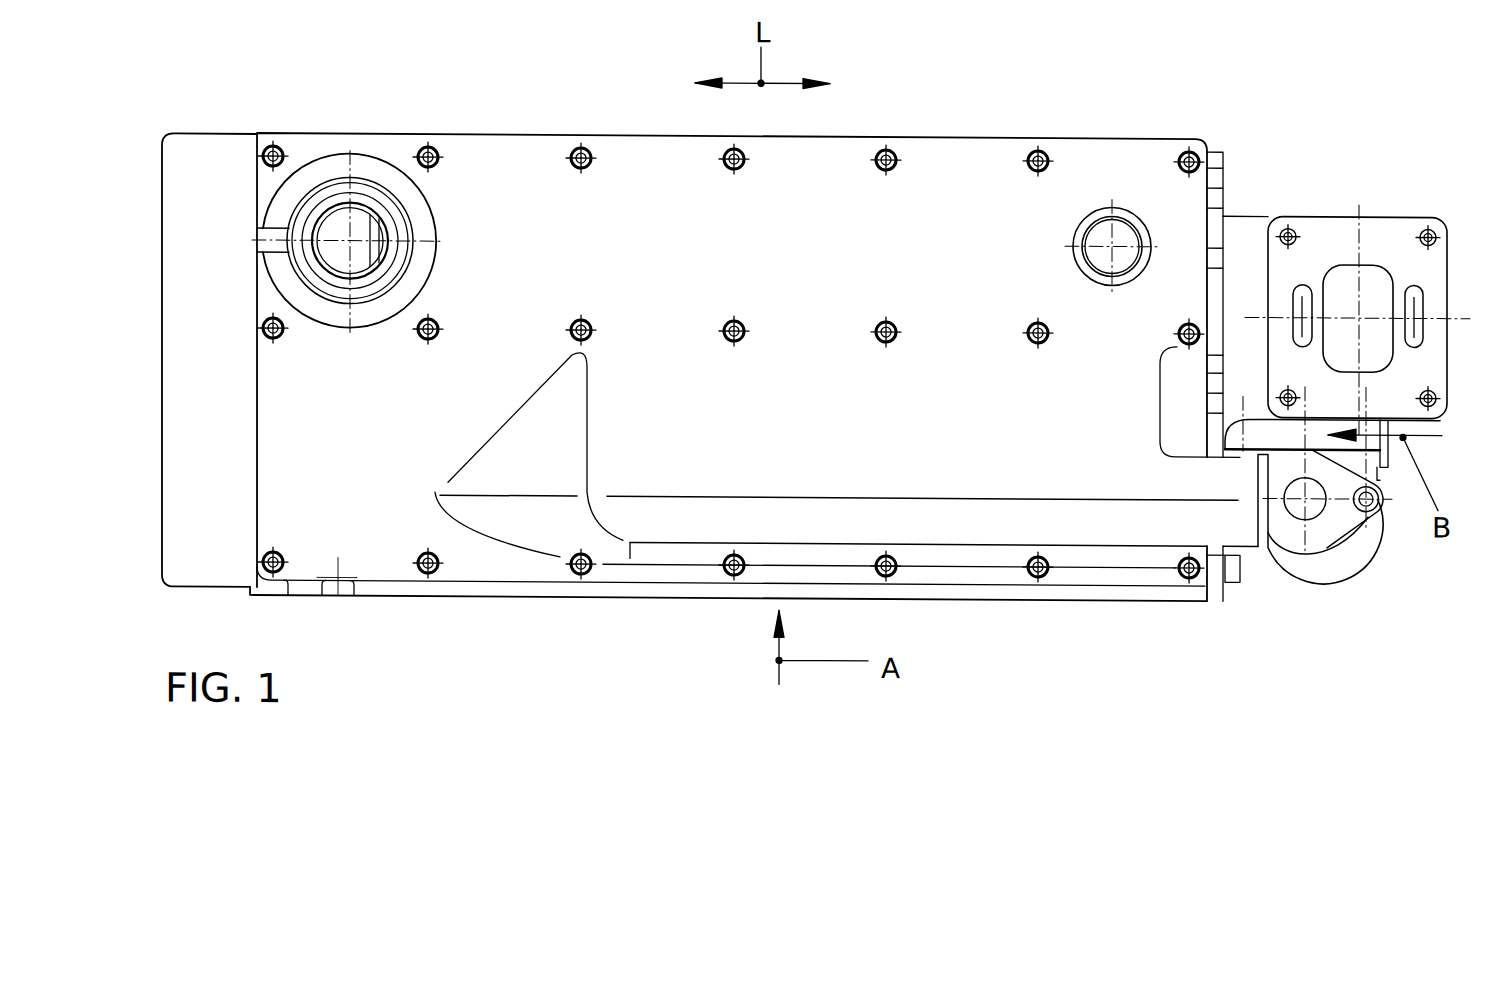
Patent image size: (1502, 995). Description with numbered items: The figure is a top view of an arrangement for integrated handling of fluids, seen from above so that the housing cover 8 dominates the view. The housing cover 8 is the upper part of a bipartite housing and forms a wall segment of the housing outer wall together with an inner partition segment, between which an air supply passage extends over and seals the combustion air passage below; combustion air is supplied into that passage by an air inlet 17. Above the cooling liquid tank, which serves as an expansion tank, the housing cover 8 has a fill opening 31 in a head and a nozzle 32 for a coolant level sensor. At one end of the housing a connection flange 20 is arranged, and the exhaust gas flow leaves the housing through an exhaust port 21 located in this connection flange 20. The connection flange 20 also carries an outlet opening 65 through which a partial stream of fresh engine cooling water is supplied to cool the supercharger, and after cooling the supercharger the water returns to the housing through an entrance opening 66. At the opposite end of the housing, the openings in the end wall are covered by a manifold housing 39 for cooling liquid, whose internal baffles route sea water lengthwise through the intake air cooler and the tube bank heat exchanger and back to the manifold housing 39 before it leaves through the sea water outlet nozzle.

The housing cover 8 is at (474, 191).
The air inlet 17 is at (1223, 512).
The connection flange 20 is at (1348, 241).
The exhaust port 21 is at (1372, 281).
The fill opening 31 is at (332, 226).
The nozzle 32 is at (1099, 227).
The manifold housing 39 is at (221, 159).
The outlet opening 65 is at (1413, 300).
The entrance opening 66 is at (1302, 296).